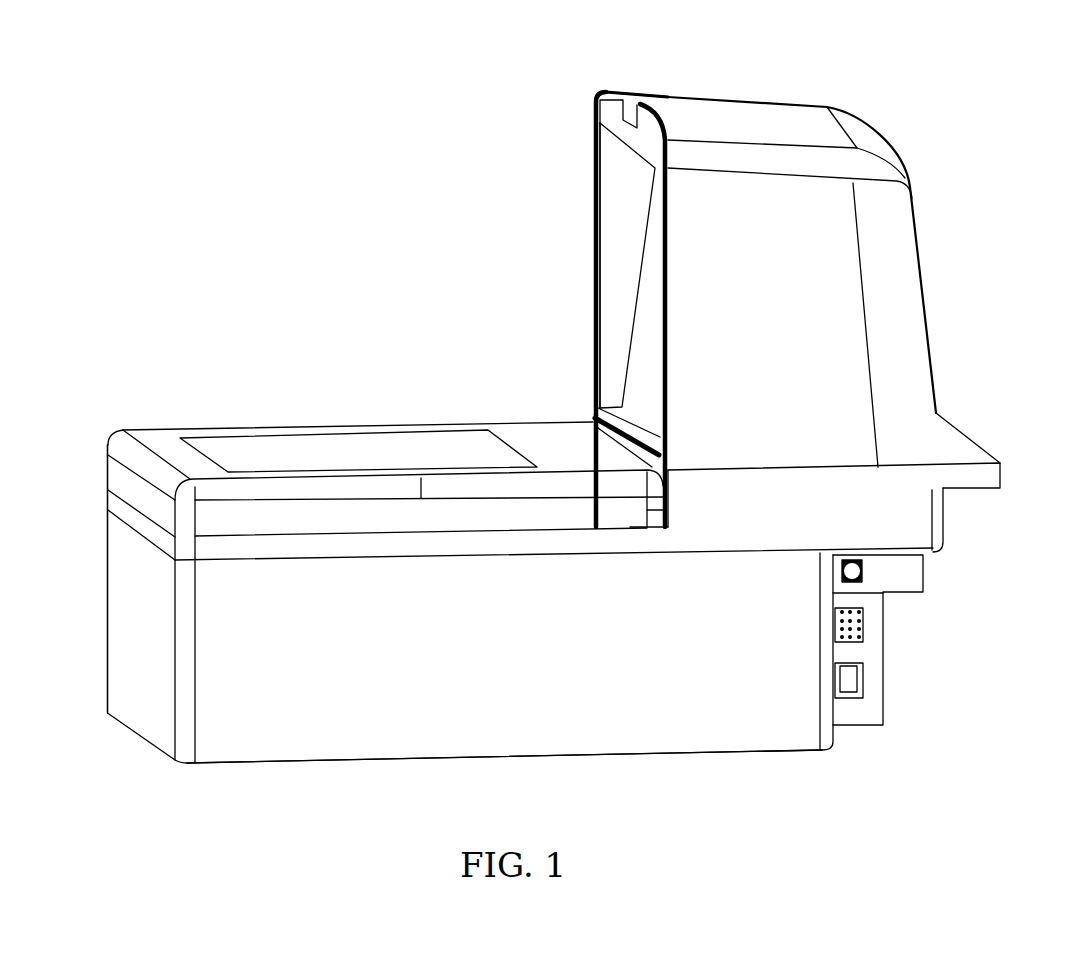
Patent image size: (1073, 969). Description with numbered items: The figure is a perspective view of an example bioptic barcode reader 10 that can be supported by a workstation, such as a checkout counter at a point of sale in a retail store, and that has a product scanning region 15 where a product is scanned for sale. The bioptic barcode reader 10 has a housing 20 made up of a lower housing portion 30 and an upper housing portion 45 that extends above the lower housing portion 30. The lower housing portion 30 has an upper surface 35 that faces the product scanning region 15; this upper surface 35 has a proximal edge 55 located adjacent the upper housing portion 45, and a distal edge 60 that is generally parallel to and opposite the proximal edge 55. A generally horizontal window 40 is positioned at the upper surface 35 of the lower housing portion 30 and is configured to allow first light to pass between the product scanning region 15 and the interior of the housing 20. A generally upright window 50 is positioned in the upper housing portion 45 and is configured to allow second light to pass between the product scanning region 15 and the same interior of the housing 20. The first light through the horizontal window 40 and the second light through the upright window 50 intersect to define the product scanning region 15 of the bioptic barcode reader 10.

The bioptic barcode reader 10 is at (983, 86).
The product scanning region 15 is at (275, 173).
The housing 20 is at (950, 546).
The lower housing portion 30 is at (550, 757).
The upper surface 35 is at (482, 423).
The horizontal window 40 is at (395, 465).
The upper housing portion 45 is at (920, 271).
The upright window 50 is at (647, 301).
The proximal edge 55 is at (668, 428).
The distal edge 60 is at (125, 451).